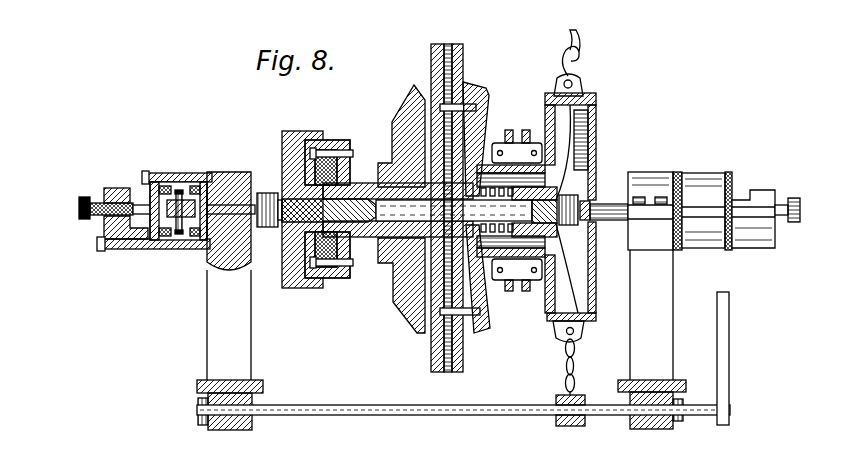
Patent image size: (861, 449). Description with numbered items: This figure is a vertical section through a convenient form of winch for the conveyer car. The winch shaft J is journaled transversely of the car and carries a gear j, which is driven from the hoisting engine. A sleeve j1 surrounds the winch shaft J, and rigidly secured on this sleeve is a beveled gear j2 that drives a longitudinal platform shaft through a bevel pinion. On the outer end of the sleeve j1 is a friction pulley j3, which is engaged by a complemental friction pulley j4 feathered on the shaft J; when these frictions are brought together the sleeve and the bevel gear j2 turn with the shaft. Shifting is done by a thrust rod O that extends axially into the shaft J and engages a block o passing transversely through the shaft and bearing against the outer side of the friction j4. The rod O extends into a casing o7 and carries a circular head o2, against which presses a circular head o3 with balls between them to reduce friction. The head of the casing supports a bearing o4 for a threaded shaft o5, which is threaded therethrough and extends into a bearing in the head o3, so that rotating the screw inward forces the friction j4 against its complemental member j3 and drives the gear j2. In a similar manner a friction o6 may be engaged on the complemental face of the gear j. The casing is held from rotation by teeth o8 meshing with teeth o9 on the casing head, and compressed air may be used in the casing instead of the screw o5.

The block o is at (266, 226).
The thrust rod O is at (266, 121).
The circular head o2 is at (200, 183).
The circular head o3 is at (162, 232).
The bearing o4 is at (105, 223).
The threaded shaft o5 is at (99, 205).
The friction o6 is at (485, 120).
The casing o7 is at (162, 234).
The teeth o8 is at (174, 186).
The teeth o9 is at (153, 190).
The gear j is at (452, 375).
The sleeve j1 is at (367, 240).
The beveled gear j2 is at (411, 320).
The friction pulley j3 is at (345, 280).
The complemental friction pulley j4 is at (288, 286).
The winch shaft J is at (612, 207).